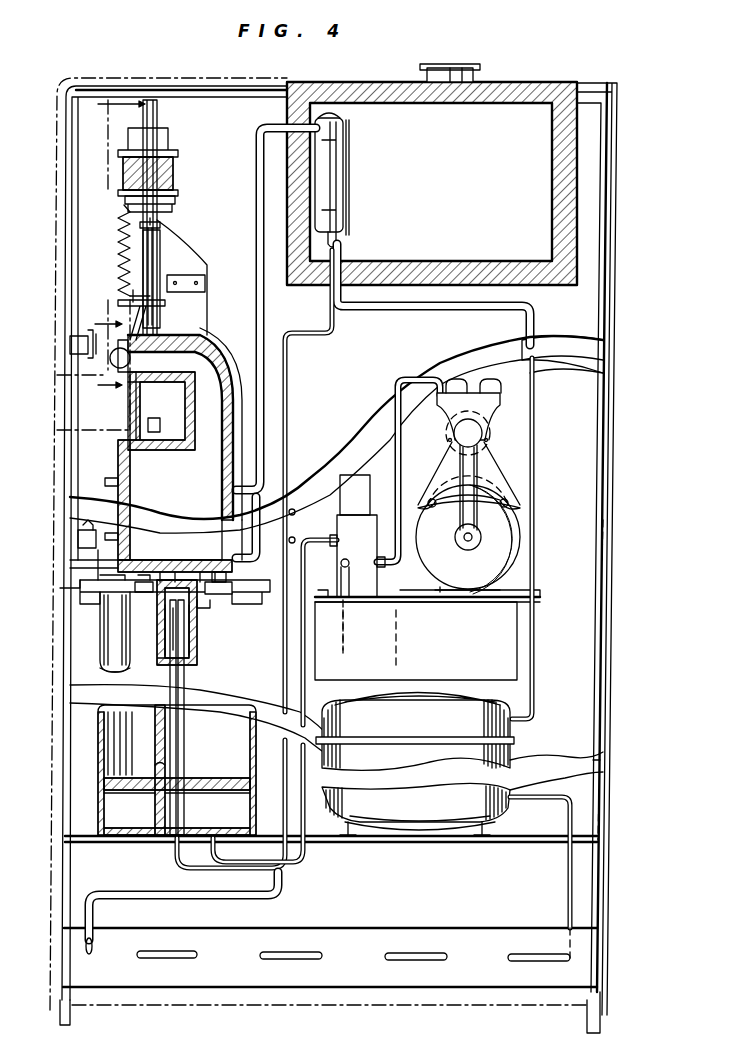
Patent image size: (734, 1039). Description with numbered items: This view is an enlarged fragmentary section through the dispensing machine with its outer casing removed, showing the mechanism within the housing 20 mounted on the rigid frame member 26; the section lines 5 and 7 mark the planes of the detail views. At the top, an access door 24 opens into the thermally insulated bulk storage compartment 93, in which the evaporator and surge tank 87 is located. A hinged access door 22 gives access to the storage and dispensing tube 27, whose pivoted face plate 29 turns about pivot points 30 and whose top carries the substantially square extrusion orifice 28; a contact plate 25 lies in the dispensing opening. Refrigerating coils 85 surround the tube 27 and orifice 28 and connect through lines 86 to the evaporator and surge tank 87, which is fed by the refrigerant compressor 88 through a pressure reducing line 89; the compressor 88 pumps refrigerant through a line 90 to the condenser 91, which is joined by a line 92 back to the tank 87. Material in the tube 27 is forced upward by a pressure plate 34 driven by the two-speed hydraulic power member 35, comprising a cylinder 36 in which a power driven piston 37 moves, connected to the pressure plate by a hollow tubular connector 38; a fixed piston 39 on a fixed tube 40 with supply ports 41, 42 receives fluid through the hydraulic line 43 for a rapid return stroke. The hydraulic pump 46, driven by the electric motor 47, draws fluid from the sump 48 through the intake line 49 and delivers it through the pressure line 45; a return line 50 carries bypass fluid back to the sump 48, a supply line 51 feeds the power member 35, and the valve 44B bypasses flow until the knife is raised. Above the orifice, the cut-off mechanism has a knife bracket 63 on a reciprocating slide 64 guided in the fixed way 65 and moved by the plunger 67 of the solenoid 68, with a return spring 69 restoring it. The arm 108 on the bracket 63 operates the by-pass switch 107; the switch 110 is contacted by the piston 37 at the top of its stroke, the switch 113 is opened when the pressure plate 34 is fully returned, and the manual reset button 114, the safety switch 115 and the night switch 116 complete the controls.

The section line 5 is at (115, 245).
The section line 7 is at (101, 235).
The housing 20 is at (612, 470).
The hinged access door 22 is at (57, 458).
The access door 24 is at (500, 82).
The contact plate 25 is at (130, 422).
The rigid frame member 26 is at (606, 660).
The storage and dispensing tube 27 is at (173, 500).
The extrusion orifice 28 is at (176, 424).
The pivoted face plate 29 is at (118, 497).
The pivot points 30 is at (118, 566).
The pressure plate 34 is at (160, 562).
The two speed hydraulic power member 35 is at (98, 728).
The enclosed cylinder 36 is at (138, 752).
The power driven piston 37 is at (140, 770).
The hollow tubular connector 38 is at (100, 688).
The fixed piston 39 is at (160, 612).
The fixed tube 40 is at (165, 668).
The hydraulic fluid supply port 41 is at (180, 655).
The hydraulic fluid supply port 42 is at (190, 628).
The hydraulic line 43 is at (180, 862).
The hydraulic control valve 44B is at (357, 536).
The pressure line 45 is at (395, 438).
The hydraulic pump 46 is at (486, 436).
The electric motor 47 is at (468, 518).
The hydraulic sump 48 is at (416, 641).
The intake line 49 is at (405, 595).
The return line 50 is at (338, 572).
The supply line 51 is at (312, 540).
The knife bracket 63 is at (128, 335).
The reciprocating slide 64 is at (160, 225).
The fixed way 65 is at (153, 258).
The plunger 67 is at (178, 203).
The solenoid 68 is at (175, 160).
The return spring 69 is at (121, 216).
The refrigerating coils 85 is at (256, 509).
The lines 86 is at (263, 310).
The evaporator and surge tank 87 is at (422, 229).
The refrigerant compressor 88 is at (459, 764).
The pressure reducing line 89 is at (535, 575).
The line 90 is at (560, 880).
The condenser 91 is at (330, 980).
The line 92 is at (285, 885).
The storage compartment 93 is at (408, 252).
The by-pass switch 107 is at (192, 268).
The arm or contact point 108 is at (130, 298).
The switch 110 is at (140, 608).
The switch 113 is at (230, 572).
The manual reset button 114 is at (80, 597).
The safety switch 115 is at (72, 342).
The night switch 116 is at (78, 536).